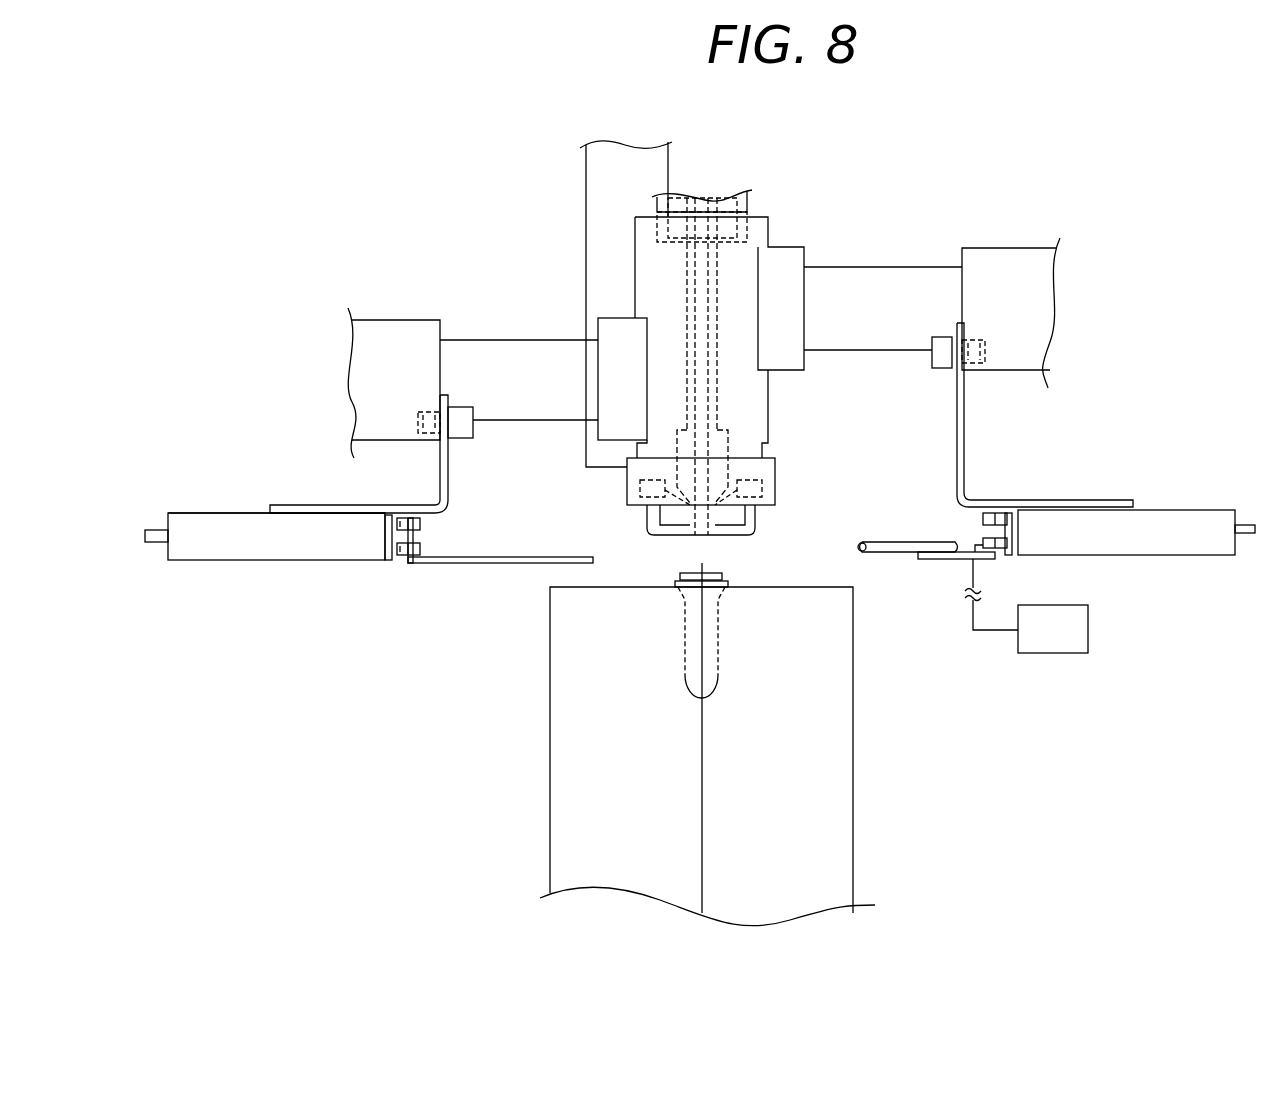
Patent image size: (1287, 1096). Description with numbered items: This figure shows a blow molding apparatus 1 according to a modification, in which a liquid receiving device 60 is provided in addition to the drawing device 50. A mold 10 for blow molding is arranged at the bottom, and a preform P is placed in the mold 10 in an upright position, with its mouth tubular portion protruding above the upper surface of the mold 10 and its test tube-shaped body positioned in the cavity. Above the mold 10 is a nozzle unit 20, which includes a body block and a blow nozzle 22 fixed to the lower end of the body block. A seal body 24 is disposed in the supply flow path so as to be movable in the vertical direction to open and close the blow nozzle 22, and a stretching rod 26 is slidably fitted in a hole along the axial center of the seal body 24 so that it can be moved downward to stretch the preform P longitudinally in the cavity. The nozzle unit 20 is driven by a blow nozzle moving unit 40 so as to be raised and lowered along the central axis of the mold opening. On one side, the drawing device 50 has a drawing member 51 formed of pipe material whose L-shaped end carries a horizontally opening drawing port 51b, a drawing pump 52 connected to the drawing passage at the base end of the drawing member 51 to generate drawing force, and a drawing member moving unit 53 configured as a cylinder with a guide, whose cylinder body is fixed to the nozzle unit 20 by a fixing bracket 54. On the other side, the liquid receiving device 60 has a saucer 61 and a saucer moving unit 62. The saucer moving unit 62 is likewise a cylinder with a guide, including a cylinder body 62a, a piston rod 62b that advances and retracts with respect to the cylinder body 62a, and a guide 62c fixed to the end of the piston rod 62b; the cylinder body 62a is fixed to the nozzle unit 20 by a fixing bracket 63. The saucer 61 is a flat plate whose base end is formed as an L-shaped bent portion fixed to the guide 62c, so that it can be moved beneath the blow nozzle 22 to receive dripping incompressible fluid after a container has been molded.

The blow molding apparatus 1 is at (1165, 214).
The blow nozzle moving unit 40 is at (604, 200).
The nozzle unit 20 is at (770, 420).
The stretching rod 26 is at (700, 385).
The seal body 24 is at (730, 445).
The blow nozzle 22 is at (718, 515).
The fixing bracket 63 is at (440, 470).
The saucer moving unit 62 is at (197, 562).
The cylinder body 62a is at (228, 520).
The piston rod 62b is at (392, 540).
The guide 62c is at (400, 560).
The saucer 61 is at (487, 565).
The liquid receiving device 60 is at (282, 585).
The fixing bracket 54 is at (964, 418).
The drawing member moving unit 53 is at (1182, 507).
The drawing member 51 is at (893, 542).
The drawing port 51b is at (862, 553).
The drawing pump 52 is at (1055, 648).
The drawing device 50 is at (1113, 586).
The mold 10 is at (856, 745).
The preform P is at (722, 623).